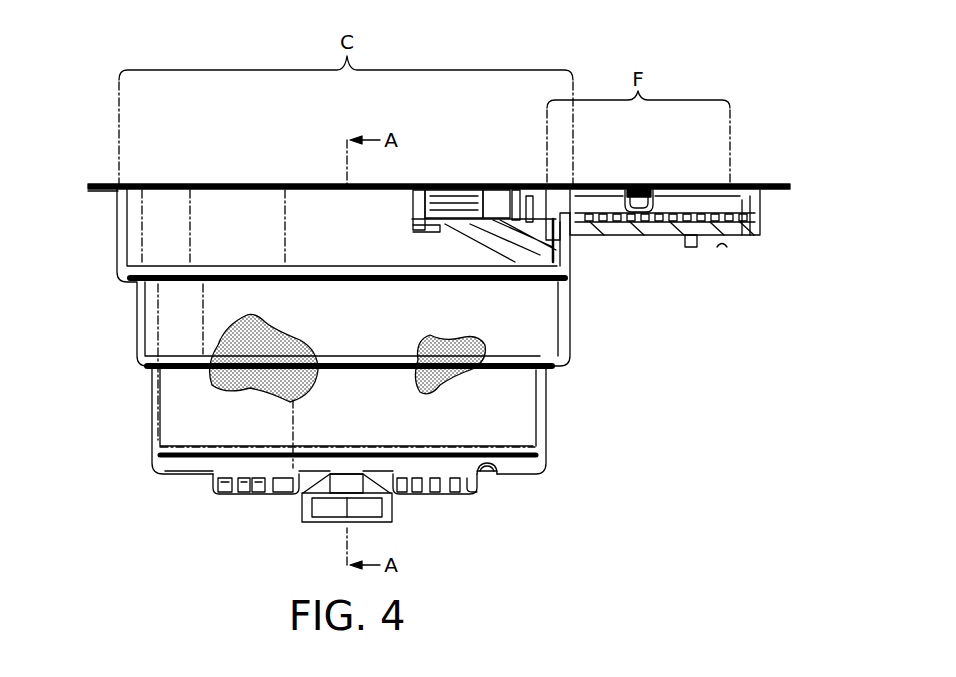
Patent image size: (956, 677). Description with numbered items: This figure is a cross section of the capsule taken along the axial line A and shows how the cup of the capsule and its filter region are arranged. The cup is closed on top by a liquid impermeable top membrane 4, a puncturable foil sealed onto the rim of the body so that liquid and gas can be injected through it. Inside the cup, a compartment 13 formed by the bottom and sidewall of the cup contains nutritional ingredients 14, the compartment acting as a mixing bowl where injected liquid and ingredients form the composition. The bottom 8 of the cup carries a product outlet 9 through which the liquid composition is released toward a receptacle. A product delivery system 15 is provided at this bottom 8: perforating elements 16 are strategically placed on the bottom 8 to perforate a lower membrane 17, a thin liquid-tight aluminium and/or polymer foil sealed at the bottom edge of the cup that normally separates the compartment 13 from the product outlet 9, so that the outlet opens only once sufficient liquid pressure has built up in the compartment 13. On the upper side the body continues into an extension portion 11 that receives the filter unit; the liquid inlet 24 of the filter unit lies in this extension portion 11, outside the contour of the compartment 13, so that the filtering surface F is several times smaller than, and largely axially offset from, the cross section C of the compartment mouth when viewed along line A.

The top membrane 4 is at (257, 183).
The bottom of the cup 8 is at (103, 218).
The product outlet 9 is at (326, 512).
The extension portion 11 is at (666, 215).
The compartment 13 is at (508, 408).
The nutritional ingredients 14 is at (220, 390).
The product delivery system 15 is at (430, 503).
The perforating elements 16 is at (238, 489).
The lower membrane 17 is at (497, 476).
The liquid inlet 24 is at (640, 186).